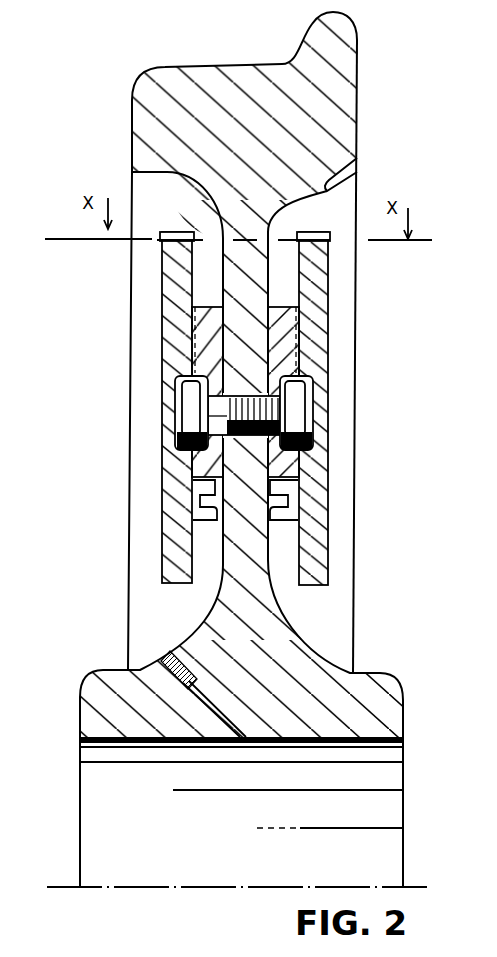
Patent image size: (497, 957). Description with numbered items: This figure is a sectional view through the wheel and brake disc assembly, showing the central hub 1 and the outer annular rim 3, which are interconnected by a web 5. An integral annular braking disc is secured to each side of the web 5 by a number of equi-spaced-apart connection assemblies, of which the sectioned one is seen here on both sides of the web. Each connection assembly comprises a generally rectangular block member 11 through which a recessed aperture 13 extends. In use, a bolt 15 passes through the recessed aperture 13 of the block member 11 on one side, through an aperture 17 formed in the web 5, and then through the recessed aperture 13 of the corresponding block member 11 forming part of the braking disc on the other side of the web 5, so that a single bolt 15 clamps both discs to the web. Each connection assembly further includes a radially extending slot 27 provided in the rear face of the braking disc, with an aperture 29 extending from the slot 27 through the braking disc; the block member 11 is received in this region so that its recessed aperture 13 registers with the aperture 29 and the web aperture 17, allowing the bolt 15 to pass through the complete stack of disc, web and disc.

The central hub 1 is at (333, 693).
The outer annular rim 3 is at (172, 115).
The web 5 is at (255, 217).
The block member 11 is at (207, 337).
The recessed aperture 13 is at (207, 396).
The bolt 15 is at (298, 463).
The aperture 17 is at (297, 507).
The radially extending slot 27 is at (207, 277).
The aperture 29 is at (162, 382).